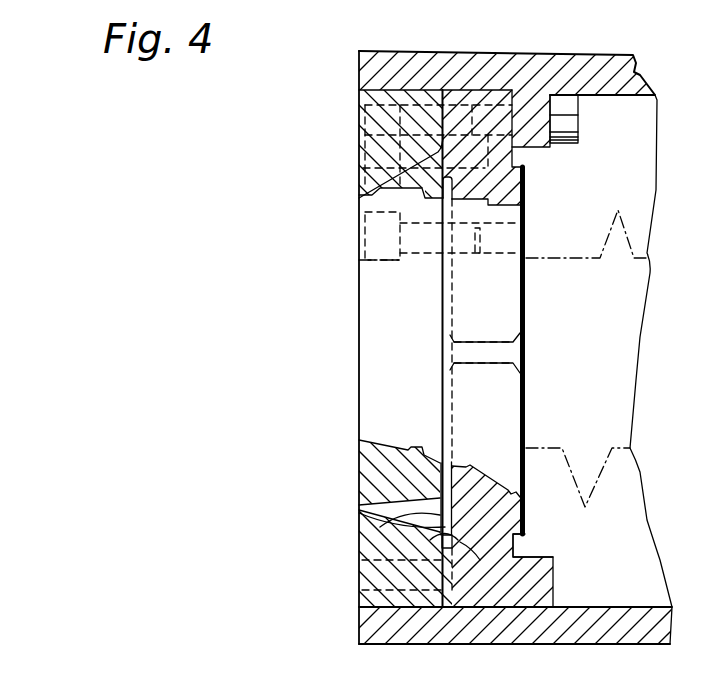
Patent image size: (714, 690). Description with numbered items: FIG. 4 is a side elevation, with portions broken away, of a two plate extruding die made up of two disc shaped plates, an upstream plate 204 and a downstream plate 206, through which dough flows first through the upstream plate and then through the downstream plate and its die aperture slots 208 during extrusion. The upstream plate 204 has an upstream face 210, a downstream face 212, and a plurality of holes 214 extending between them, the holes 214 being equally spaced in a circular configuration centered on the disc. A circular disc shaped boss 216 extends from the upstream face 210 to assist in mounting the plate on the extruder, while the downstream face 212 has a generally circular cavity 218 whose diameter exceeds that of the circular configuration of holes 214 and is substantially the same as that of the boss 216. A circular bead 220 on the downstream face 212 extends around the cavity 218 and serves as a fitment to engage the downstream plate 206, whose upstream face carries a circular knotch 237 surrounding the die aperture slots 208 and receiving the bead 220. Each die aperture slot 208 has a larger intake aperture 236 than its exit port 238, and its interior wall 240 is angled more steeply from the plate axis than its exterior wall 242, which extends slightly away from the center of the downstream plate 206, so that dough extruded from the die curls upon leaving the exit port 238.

The upstream plate 204 is at (498, 88).
The downstream plate 206 is at (404, 108).
The die aperture slots 208 is at (400, 517).
The upstream face 210 is at (518, 554).
The downstream face 212 is at (440, 540).
The holes 214 is at (457, 346).
The boss 216 is at (526, 408).
The cavity 218 is at (460, 542).
The bead 220 is at (456, 545).
The intake aperture 236 is at (440, 538).
The circular knotch 237 is at (359, 195).
The exit port 238 is at (372, 503).
The interior wall 240 is at (362, 456).
The exterior wall 242 is at (443, 536).